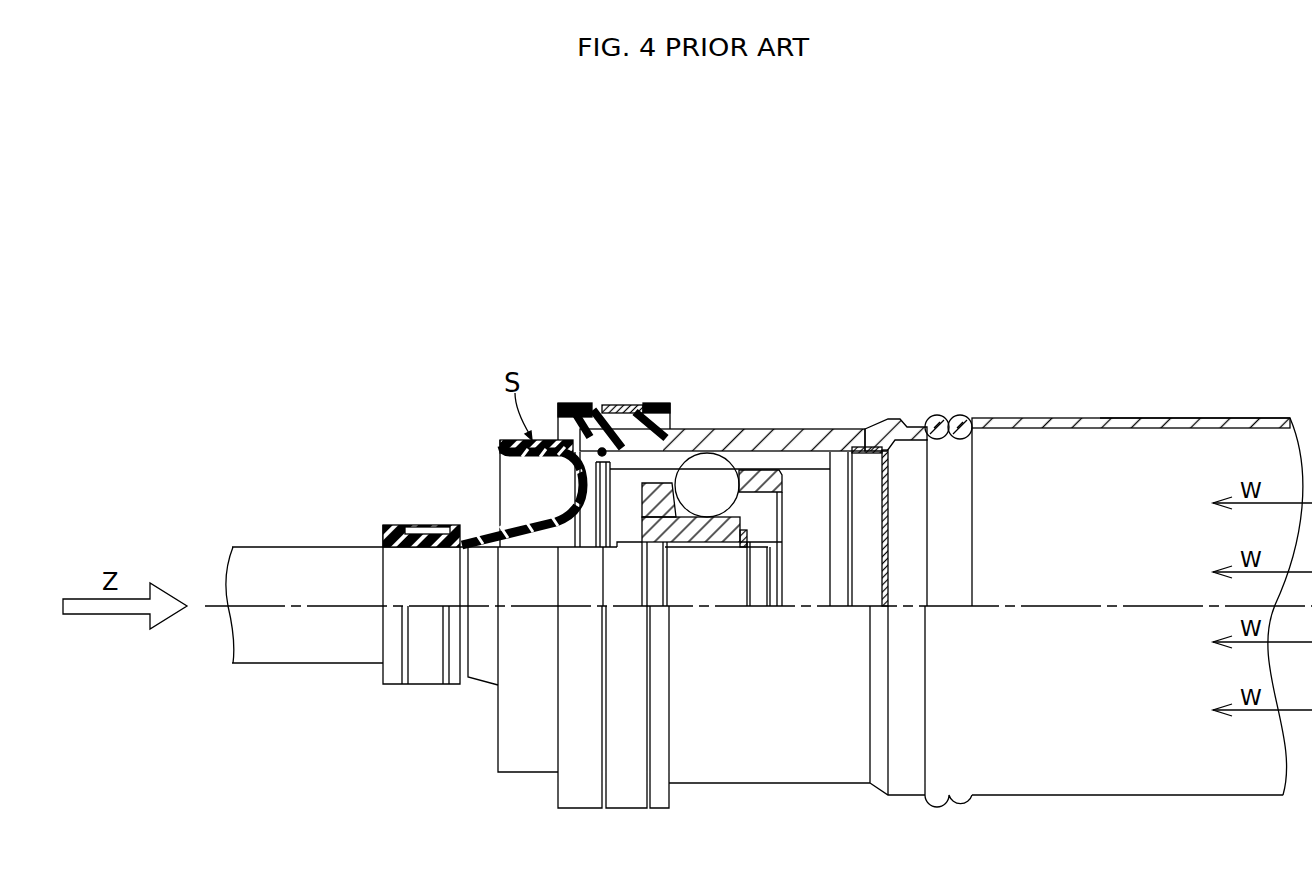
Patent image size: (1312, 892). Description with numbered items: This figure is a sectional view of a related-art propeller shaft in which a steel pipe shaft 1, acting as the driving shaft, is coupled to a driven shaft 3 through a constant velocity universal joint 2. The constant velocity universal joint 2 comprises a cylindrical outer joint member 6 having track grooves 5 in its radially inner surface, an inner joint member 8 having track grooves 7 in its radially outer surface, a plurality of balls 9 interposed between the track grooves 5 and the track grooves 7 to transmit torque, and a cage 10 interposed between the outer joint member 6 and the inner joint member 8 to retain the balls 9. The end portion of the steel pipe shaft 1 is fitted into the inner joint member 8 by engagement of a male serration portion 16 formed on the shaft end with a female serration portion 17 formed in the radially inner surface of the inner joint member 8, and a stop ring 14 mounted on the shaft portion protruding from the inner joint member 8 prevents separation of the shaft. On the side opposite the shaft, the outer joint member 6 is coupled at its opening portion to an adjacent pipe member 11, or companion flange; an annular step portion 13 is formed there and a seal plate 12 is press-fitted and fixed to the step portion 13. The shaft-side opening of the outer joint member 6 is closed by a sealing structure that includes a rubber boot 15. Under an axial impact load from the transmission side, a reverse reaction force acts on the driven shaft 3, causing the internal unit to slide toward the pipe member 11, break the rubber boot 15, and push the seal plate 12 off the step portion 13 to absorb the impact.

The steel pipe shaft 1 is at (292, 545).
The constant velocity universal joint 2 is at (788, 415).
The driven shaft 3 is at (1080, 405).
The track grooves 5 is at (640, 458).
The outer joint member 6 is at (828, 428).
The track grooves 7 is at (661, 507).
The inner joint member 8 is at (727, 523).
The balls 9 is at (714, 467).
The cage 10 is at (753, 480).
The pipe member 11 is at (1152, 420).
The seal plate 12 is at (888, 548).
The step portion 13 is at (860, 453).
The stop ring 14 is at (750, 537).
The rubber boot 15 is at (533, 522).
The male serration portion 16 is at (717, 580).
The female serration portion 17 is at (690, 543).